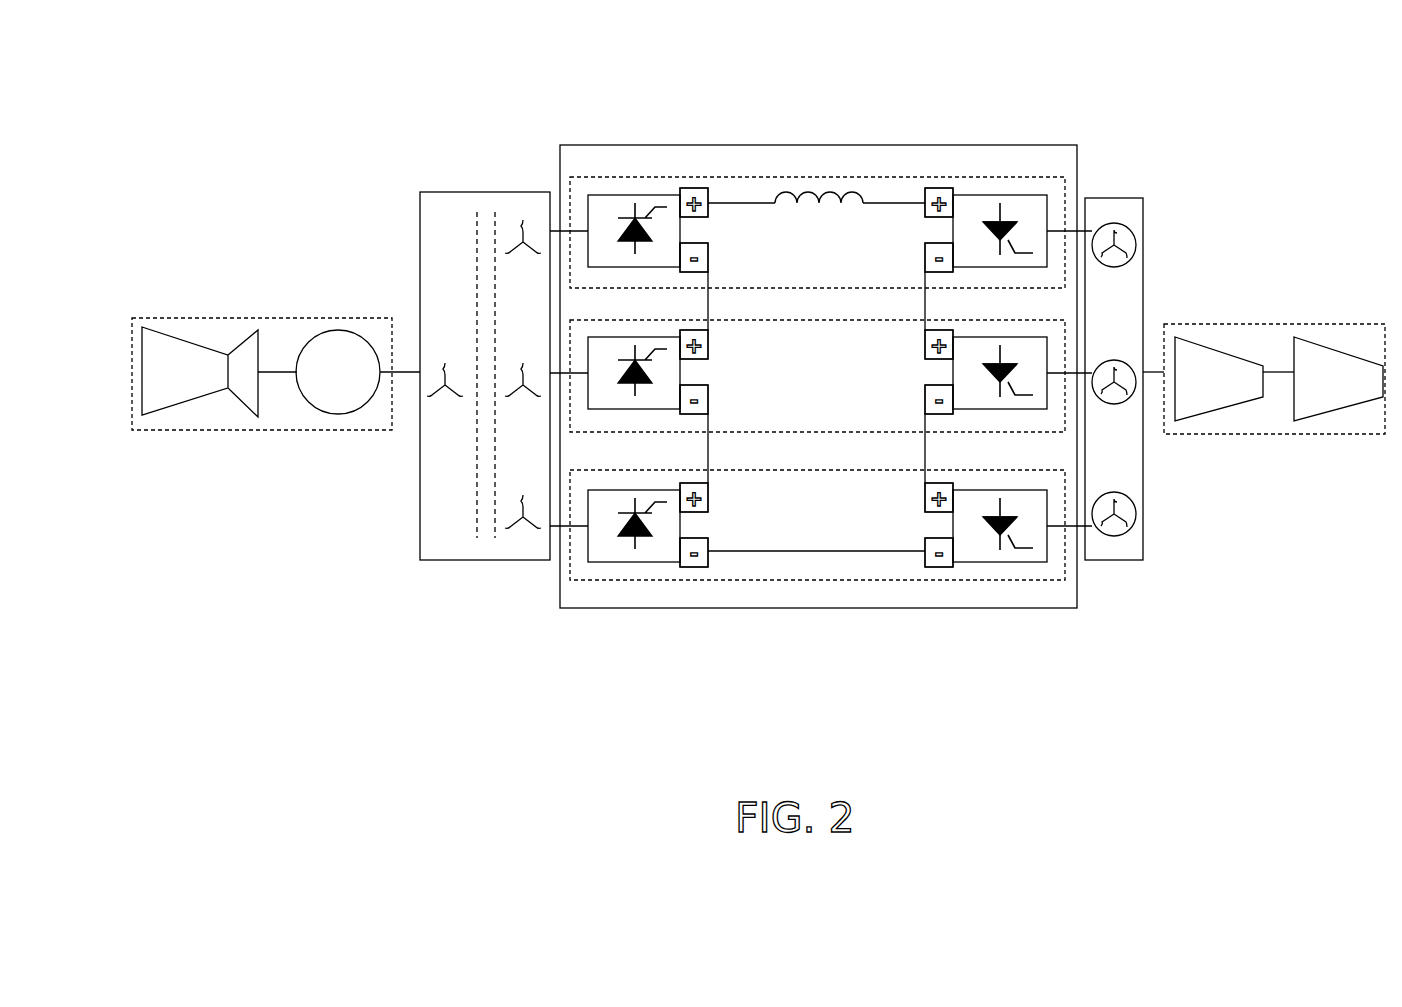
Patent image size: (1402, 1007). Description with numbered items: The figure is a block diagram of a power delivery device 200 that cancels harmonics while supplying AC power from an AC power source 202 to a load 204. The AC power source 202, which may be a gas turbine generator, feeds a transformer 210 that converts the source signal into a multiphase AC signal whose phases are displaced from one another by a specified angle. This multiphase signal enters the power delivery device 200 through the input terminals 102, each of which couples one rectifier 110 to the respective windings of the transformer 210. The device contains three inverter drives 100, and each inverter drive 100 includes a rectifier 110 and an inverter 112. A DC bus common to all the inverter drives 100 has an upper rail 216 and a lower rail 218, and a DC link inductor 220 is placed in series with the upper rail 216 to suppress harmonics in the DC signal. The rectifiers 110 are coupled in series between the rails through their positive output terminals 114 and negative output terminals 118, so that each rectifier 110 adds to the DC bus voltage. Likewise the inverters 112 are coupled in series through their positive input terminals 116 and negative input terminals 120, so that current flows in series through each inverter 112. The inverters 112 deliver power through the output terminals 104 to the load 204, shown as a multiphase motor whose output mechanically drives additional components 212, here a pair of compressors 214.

The inverter drive 100 is at (763, 288).
The input terminal 102 is at (578, 228).
The output terminal 104 is at (1055, 231).
The rectifier 110 is at (682, 223).
The inverter 112 is at (953, 226).
The positive output terminal 114 is at (695, 188).
The positive input terminal 116 is at (940, 188).
The negative output terminal 118 is at (708, 257).
The negative input terminal 120 is at (925, 250).
The power delivery device 200 is at (1048, 145).
The AC power source 202 is at (243, 318).
The load 204 is at (1143, 520).
The transformer 210 is at (420, 470).
The additional components 212 is at (1309, 434).
The compressor 214 is at (1307, 337).
The upper rail 216 is at (740, 203).
The lower rail 218 is at (873, 551).
The DC link inductor 220 is at (852, 191).